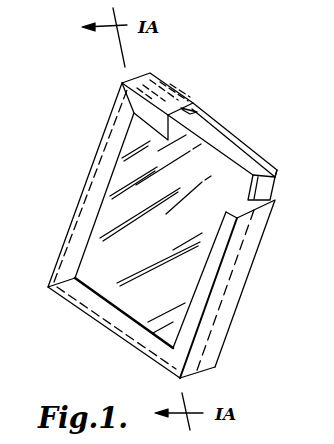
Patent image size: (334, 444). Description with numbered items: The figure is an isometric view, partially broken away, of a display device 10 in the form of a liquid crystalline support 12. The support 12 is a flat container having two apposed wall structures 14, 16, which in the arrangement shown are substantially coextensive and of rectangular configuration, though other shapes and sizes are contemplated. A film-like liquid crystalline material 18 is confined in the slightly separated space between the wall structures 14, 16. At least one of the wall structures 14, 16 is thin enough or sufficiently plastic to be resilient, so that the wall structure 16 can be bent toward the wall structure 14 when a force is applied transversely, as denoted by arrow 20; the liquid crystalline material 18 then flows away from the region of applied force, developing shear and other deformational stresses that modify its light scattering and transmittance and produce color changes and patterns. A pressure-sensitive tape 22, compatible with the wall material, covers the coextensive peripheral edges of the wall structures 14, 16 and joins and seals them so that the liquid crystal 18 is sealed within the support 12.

The display device 10 is at (235, 122).
The liquid crystalline support 12 is at (110, 113).
The wall structure 14 is at (233, 147).
The wall structure 16 is at (295, 153).
The liquid crystalline material 18 is at (272, 196).
The arrow 20 is at (130, 205).
The pressure-sensitive tape 22 is at (243, 265).